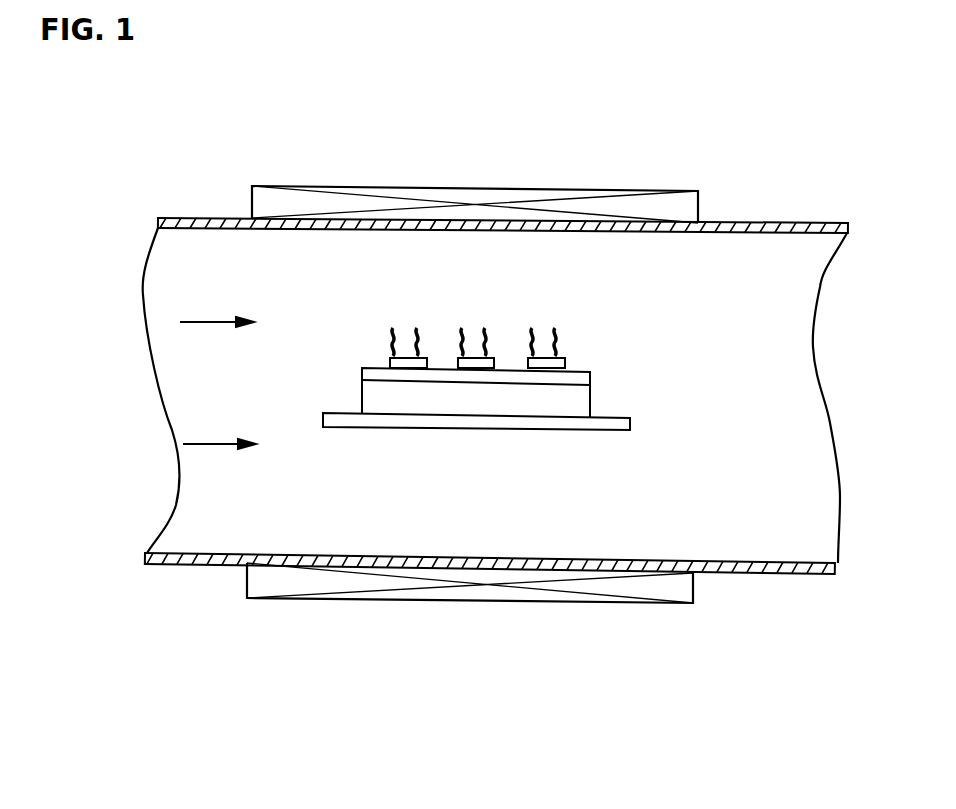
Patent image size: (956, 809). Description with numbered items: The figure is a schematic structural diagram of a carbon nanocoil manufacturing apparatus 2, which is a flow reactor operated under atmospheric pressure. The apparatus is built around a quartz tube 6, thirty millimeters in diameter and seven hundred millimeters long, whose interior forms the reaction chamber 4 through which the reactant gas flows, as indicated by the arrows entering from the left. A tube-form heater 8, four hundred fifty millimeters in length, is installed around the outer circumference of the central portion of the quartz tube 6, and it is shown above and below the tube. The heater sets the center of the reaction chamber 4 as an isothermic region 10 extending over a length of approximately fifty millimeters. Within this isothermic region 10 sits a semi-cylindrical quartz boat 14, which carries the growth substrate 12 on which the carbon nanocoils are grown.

The manufacturing apparatus 2 is at (790, 178).
The reaction chamber 4 is at (320, 515).
The quartz tube 6 is at (765, 575).
The tube-form heater 8 is at (503, 195).
The isothermic region 10 is at (422, 278).
The growth substrate 12 is at (612, 368).
The quartz boat 14 is at (612, 428).